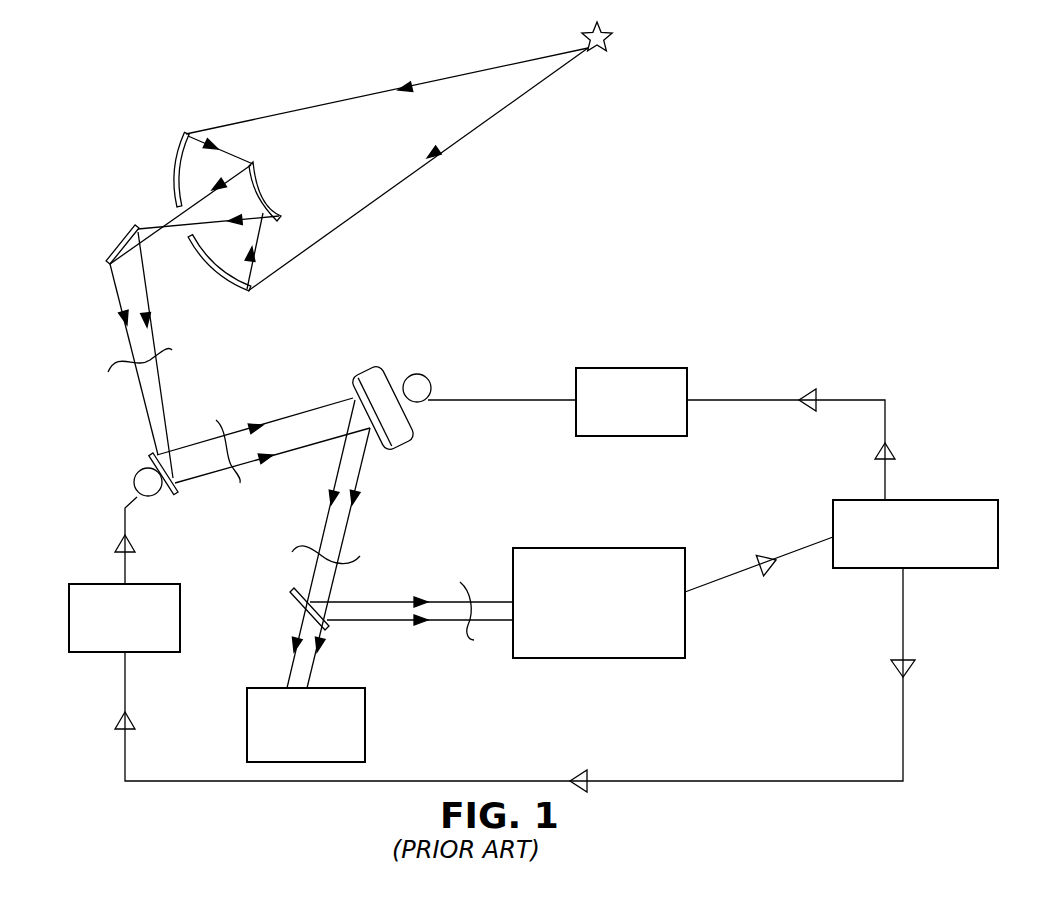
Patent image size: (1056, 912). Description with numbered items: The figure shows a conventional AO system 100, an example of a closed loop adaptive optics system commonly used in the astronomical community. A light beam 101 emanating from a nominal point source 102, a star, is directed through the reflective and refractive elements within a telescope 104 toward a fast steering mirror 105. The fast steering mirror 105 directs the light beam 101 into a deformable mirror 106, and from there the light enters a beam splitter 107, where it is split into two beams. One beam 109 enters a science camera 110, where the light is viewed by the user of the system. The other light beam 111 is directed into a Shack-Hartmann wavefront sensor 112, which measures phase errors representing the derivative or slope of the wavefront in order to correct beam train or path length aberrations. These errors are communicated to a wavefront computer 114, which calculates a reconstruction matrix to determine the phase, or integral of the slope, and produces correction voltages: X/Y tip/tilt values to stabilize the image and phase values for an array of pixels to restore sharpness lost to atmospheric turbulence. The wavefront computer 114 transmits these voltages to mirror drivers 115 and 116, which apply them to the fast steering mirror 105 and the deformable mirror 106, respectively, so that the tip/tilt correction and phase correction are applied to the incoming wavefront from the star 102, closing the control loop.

The conventional AO system 100 is at (760, 152).
The light beam 101 is at (508, 103).
The nominal point source 102 is at (612, 40).
The telescope 104 is at (165, 155).
The fast steering mirror 105 is at (146, 463).
The deformable mirror 106 is at (397, 372).
The beam splitter 107 is at (285, 598).
The beam 109 is at (288, 668).
The science camera 110 is at (343, 687).
The light beam 111 is at (388, 600).
The Shack-Hartmann wavefront sensor 112 is at (632, 550).
The wavefront computer 114 is at (955, 498).
The mirror driver 115 is at (83, 583).
The mirror driver 116 is at (657, 368).